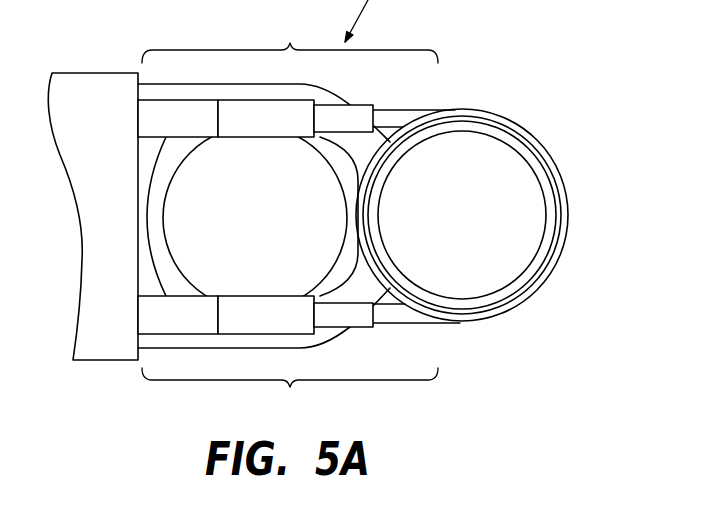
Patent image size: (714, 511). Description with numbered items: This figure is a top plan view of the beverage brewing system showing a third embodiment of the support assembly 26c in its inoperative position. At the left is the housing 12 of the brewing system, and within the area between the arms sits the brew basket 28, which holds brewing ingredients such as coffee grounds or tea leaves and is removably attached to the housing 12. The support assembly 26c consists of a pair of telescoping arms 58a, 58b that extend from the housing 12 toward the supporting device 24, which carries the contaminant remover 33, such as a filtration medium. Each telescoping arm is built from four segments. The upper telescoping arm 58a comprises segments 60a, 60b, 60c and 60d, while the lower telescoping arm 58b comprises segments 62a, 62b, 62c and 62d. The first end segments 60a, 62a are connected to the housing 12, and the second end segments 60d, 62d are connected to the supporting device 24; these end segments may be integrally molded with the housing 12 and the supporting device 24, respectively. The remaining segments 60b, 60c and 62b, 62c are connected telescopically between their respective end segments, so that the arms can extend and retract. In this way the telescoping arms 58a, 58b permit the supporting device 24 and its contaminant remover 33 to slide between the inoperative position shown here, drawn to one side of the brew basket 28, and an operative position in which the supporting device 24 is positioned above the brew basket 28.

The housing 12 is at (121, 229).
The supporting device 24 is at (498, 317).
The support assembly 26c is at (184, 392).
The brew basket 28 is at (268, 231).
The contaminant remover 33 is at (478, 232).
The telescoping arm 58a is at (288, 75).
The telescoping arm 58b is at (288, 357).
The first end segment 60a is at (186, 133).
The arm segment 60b is at (269, 133).
The arm segment 60c is at (338, 122).
The second end segment 60d is at (392, 116).
The first end segment 62a is at (186, 330).
The arm segment 62b is at (269, 330).
The arm segment 62c is at (341, 324).
The second end segment 62d is at (402, 312).